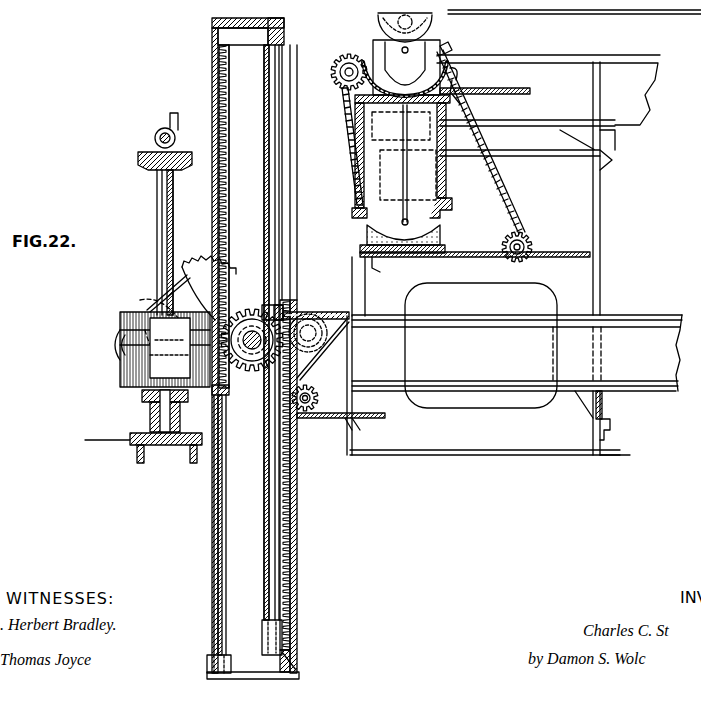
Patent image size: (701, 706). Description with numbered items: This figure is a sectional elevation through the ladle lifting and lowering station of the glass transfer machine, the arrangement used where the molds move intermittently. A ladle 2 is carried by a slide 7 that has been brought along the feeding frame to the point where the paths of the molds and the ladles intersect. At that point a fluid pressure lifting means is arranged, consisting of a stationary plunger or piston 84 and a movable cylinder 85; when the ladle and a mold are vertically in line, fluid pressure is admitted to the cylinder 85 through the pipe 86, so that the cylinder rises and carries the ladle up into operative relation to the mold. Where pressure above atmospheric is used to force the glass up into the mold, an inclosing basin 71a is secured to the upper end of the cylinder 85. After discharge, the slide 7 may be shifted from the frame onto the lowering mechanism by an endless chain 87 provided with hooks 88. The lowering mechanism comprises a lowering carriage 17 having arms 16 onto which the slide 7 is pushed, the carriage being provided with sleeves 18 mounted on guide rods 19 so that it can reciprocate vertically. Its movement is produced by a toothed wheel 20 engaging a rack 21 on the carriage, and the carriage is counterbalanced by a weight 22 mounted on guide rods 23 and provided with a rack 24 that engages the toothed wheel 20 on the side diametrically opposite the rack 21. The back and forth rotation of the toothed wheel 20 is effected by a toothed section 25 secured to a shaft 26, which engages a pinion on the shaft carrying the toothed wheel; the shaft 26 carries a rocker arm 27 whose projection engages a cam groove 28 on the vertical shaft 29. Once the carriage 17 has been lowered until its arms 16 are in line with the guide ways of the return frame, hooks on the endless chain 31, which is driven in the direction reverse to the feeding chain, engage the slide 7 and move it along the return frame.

The ladle 2 is at (378, 15).
The slide 7 is at (380, 38).
The inclosing basin 71a is at (446, 50).
The hook 88 is at (460, 77).
The endless chain 87 is at (356, 142).
The movable cylinder 85 is at (447, 185).
The stationary plunger or piston 84 is at (408, 192).
The pipe 86 is at (395, 214).
The weight 22 is at (177, 112).
The rack 24 is at (229, 158).
The toothed section 25 is at (188, 262).
The vertical shaft 29 is at (165, 270).
The rocker arm 27 is at (138, 306).
The cam groove 28 is at (128, 322).
The shaft 26 is at (118, 349).
The sleeve 18 is at (264, 306).
The arm 16 is at (314, 316).
The toothed wheel 20 is at (254, 372).
The endless chain 31 is at (334, 418).
The guide rod 23 is at (228, 462).
The guide rod 19 is at (266, 485).
The rack 21 is at (282, 520).
The lowering carriage 17 is at (298, 508).